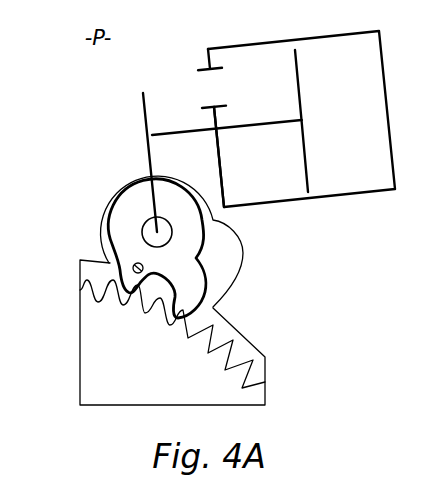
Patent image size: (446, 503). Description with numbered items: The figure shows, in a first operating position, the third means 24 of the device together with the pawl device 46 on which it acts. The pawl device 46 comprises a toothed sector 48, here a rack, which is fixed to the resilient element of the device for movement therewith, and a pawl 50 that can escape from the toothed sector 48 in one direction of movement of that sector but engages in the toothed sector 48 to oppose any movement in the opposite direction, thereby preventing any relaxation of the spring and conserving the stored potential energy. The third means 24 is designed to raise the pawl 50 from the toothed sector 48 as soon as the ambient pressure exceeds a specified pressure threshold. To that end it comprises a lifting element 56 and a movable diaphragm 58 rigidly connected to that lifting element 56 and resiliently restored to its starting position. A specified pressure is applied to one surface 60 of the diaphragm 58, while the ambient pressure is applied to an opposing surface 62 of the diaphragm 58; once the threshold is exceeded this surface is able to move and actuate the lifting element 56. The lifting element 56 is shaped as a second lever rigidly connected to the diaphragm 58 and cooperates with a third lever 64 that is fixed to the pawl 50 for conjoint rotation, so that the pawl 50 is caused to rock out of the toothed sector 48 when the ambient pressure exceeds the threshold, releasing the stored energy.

The third means 24 is at (323, 217).
The pawl device 46 is at (79, 192).
The toothed sector 48 is at (110, 375).
The pawl 50 is at (127, 228).
The lifting element 56 is at (193, 127).
The movable diaphragm 58 is at (303, 52).
The surface of the diaphragm 60 is at (305, 172).
The opposing surface of the diaphragm 62 is at (307, 150).
The third lever 64 is at (143, 148).